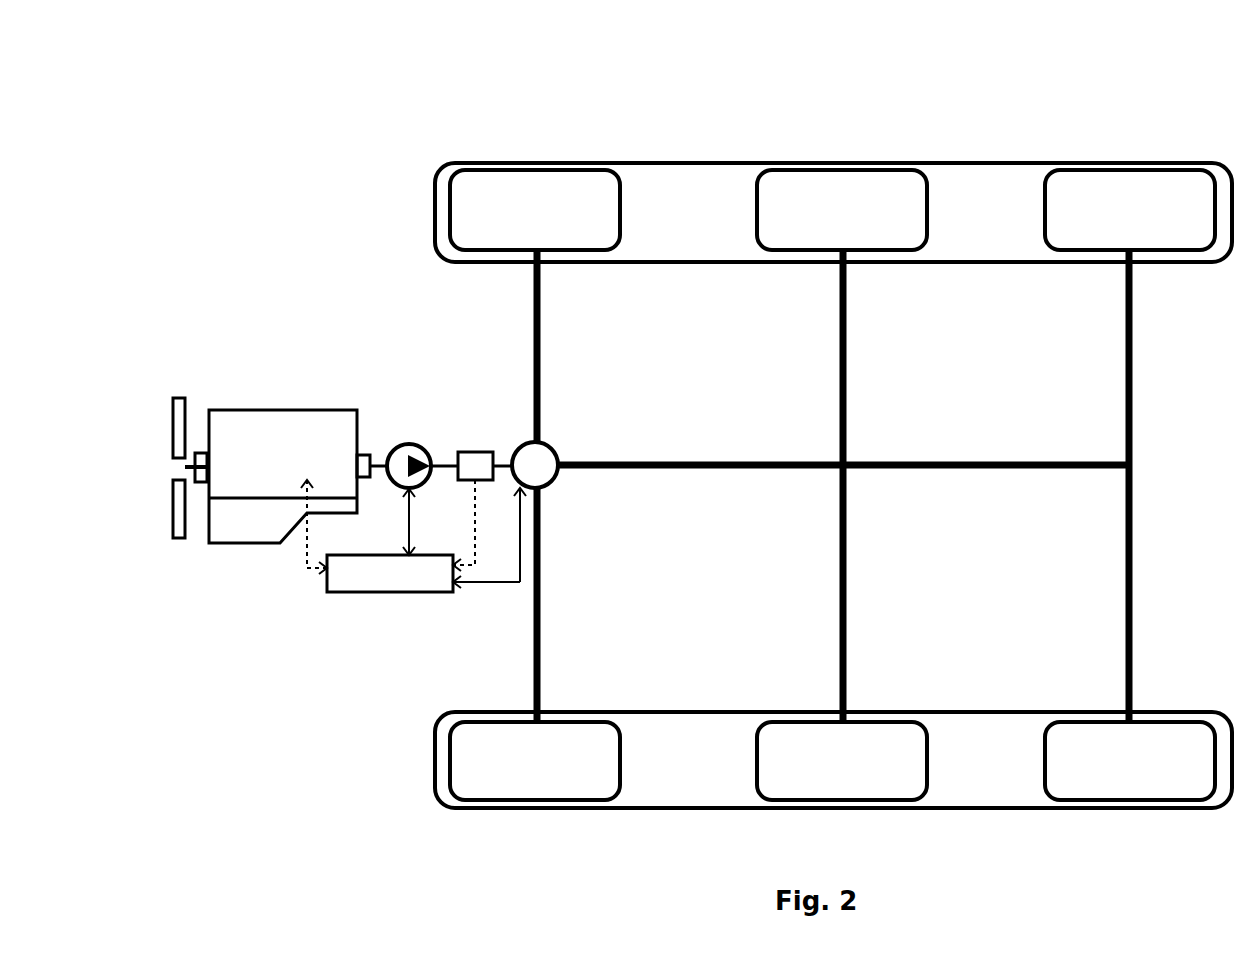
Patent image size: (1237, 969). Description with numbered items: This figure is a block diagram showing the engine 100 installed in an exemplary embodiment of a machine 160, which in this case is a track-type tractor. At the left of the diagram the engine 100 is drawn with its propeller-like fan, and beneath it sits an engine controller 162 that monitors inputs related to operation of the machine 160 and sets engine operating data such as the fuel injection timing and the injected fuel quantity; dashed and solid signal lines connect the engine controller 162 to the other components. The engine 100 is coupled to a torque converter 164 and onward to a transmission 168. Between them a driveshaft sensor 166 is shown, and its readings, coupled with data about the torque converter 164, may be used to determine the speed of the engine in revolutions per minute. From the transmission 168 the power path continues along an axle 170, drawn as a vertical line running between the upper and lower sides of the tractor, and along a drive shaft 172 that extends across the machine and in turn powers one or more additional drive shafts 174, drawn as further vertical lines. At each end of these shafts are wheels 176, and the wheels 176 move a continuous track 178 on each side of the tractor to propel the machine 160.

The engine 100 is at (265, 409).
The machine 160 is at (773, 65).
The engine controller 162 is at (351, 592).
The torque converter 164 is at (400, 444).
The driveshaft sensor 166 is at (480, 452).
The transmission 168 is at (520, 446).
The axle 170 is at (531, 330).
The drive shaft 172 is at (724, 461).
The additional drive shafts 174 is at (839, 329).
The wheels 176 is at (528, 170).
The continuous track 178 is at (690, 163).